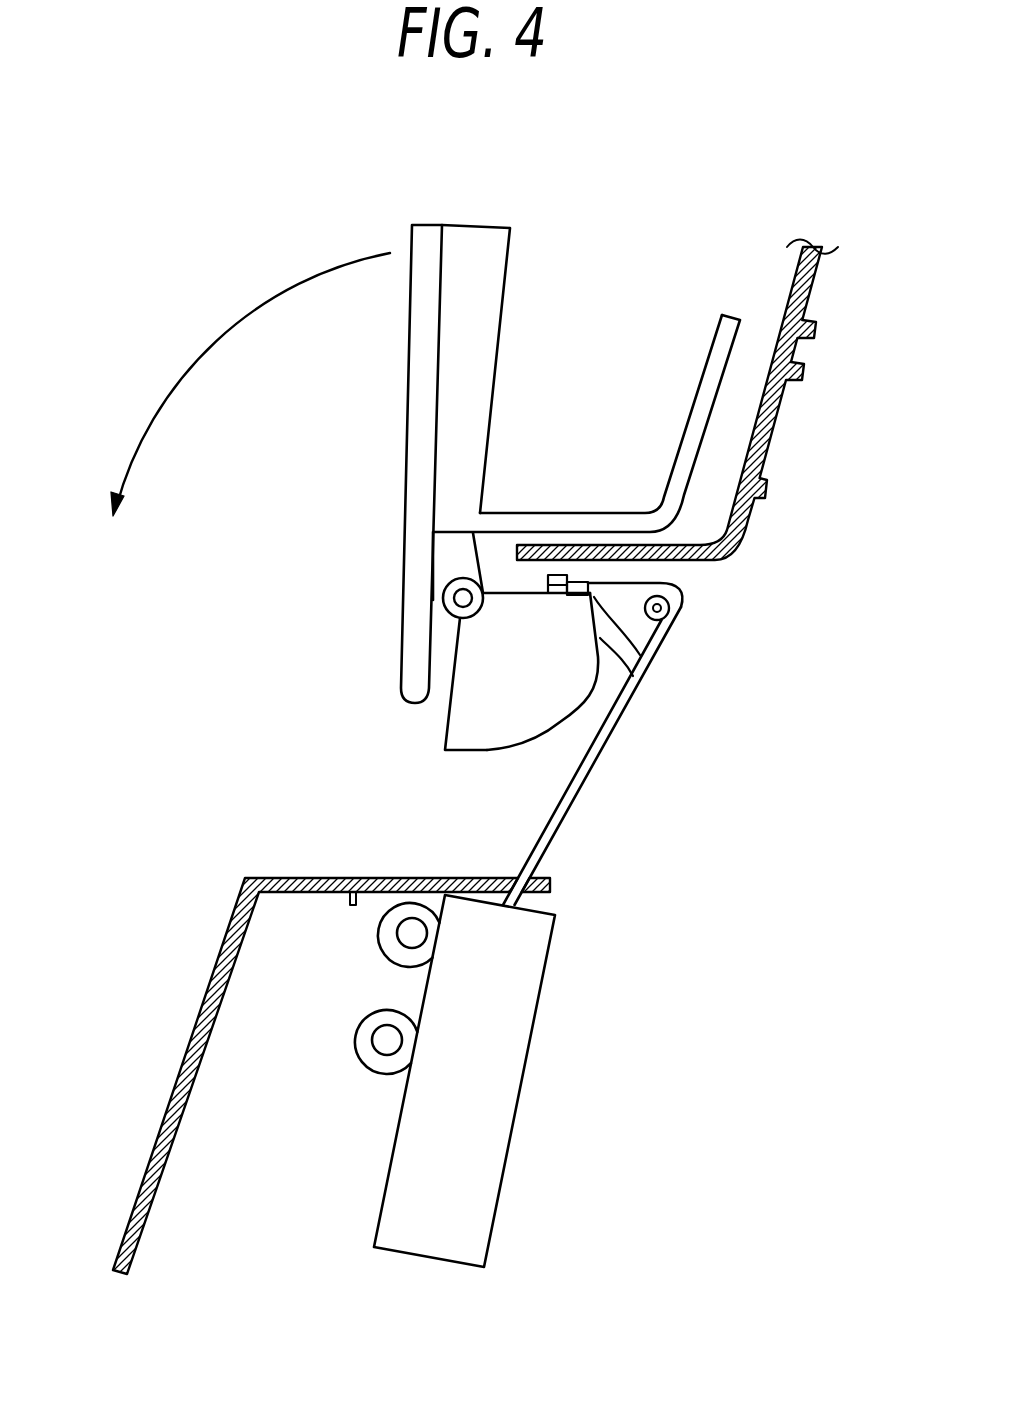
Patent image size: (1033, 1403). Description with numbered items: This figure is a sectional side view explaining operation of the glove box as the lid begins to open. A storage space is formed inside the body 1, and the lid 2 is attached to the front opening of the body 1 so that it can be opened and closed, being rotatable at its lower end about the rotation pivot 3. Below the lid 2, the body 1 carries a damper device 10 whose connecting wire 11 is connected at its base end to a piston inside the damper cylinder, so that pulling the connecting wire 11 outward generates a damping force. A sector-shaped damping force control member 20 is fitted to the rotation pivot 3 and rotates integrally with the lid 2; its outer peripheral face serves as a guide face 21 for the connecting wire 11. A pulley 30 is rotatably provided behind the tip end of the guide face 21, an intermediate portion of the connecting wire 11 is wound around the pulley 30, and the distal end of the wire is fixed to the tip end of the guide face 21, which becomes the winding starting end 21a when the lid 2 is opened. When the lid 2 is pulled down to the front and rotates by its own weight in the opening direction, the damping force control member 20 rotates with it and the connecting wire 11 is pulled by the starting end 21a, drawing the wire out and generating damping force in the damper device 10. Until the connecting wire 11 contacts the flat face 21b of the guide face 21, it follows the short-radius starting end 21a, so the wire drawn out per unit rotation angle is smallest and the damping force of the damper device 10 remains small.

The body 1 is at (795, 425).
The lid 2 is at (403, 453).
The rotation pivot 3 is at (445, 597).
The damper device 10 is at (525, 1082).
The connecting wire 11 is at (585, 775).
The damping force control member 20 is at (425, 736).
The guide face 21 is at (563, 720).
The winding starting end 21a is at (643, 657).
The flat face 21b is at (642, 690).
The pulley 30 is at (670, 604).